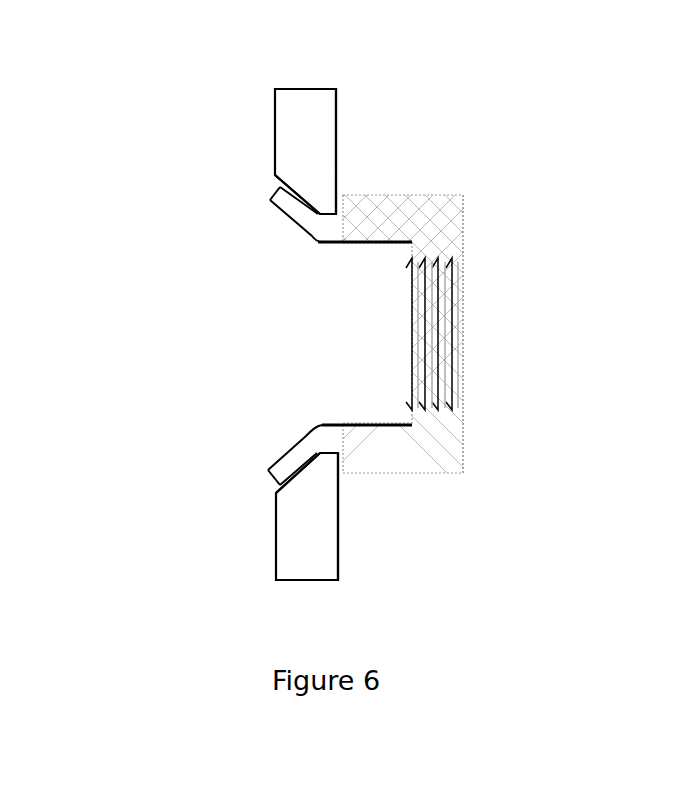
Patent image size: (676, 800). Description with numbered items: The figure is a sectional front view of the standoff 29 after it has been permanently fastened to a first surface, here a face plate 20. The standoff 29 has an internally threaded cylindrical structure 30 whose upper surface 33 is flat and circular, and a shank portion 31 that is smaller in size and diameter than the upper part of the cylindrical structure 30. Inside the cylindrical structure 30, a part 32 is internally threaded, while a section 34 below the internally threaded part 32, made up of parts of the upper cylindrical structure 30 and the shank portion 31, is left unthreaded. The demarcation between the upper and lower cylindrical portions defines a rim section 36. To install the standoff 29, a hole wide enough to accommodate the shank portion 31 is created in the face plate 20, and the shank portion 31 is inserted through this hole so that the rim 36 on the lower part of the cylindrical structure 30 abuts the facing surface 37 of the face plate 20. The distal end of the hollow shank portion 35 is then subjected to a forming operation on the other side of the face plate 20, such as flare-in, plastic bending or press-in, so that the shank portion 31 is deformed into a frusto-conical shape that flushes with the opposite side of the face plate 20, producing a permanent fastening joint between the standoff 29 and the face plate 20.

The face plate 20 is at (313, 88).
The standoff 29 is at (63, 600).
The cylindrical structure 30 is at (403, 195).
The shank portion 31 is at (290, 218).
The internally threaded part 32 is at (445, 408).
The upper surface 33 is at (464, 243).
The unthreaded section 34 is at (343, 243).
The distal end of the hollow shank portion 35 is at (275, 194).
The rim section 36 is at (340, 190).
The facing surface 37 is at (338, 103).